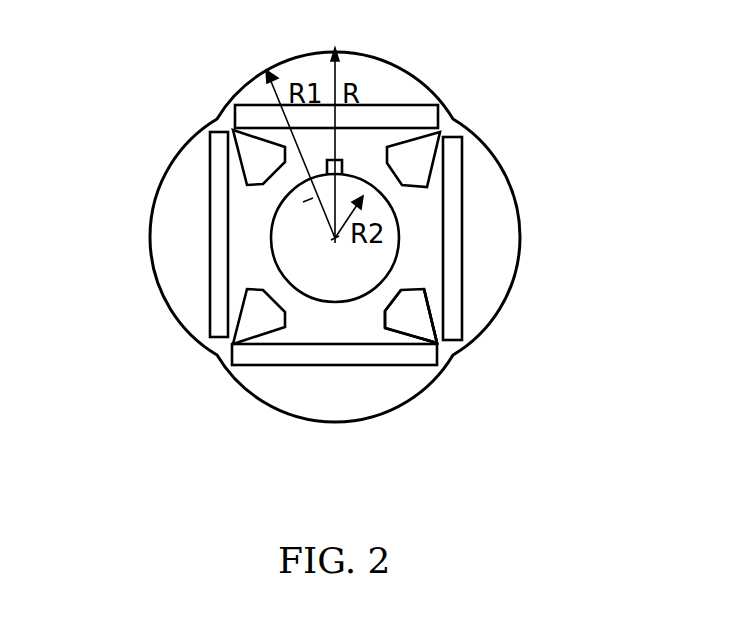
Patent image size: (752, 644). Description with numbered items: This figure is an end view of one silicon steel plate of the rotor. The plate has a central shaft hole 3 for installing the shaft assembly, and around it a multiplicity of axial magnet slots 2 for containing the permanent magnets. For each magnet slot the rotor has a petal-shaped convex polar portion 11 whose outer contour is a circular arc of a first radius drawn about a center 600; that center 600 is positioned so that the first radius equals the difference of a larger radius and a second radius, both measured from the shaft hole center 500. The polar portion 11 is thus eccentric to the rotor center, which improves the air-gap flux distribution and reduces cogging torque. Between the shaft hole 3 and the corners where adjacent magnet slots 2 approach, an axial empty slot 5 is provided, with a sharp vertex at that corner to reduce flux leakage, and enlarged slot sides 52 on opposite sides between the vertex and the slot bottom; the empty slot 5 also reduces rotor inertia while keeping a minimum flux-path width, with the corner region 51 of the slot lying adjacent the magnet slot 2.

The petal-shaped convex polar portion 11 is at (397, 58).
The axial magnet slot 2 is at (212, 153).
The axial empty slot 5 is at (235, 128).
The shaft hole 3 is at (281, 265).
The center 600 is at (340, 193).
The shaft hole center 500 is at (335, 237).
The enlarged slot side 52 is at (383, 318).
The corner of wedge block 51 is at (435, 340).